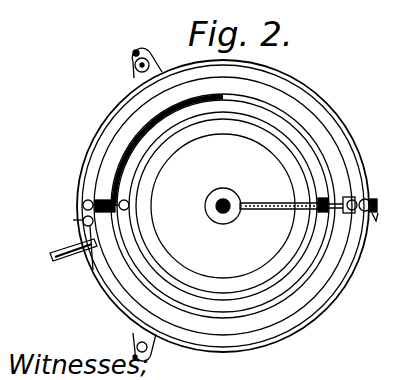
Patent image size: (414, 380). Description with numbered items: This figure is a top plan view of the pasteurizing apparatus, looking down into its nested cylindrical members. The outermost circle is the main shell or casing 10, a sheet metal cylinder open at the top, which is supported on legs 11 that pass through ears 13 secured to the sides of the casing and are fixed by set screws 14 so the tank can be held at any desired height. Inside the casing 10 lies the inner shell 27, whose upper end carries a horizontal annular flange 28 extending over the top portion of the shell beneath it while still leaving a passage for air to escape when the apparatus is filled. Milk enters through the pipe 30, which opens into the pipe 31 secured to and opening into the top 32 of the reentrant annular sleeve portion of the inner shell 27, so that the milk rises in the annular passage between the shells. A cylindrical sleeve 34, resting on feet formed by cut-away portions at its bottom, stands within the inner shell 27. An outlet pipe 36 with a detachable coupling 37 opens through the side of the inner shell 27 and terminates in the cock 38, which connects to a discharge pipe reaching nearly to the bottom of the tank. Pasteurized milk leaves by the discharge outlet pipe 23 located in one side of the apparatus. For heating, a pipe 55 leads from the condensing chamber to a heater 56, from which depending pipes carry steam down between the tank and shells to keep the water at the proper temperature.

The main shell or casing 10 is at (294, 78).
The legs 11 is at (123, 347).
The ears 13 is at (134, 78).
The set screws 14 is at (135, 52).
The discharge outlet pipe 23 is at (67, 243).
The inner shell 27 is at (292, 115).
The horizontal annular flange 28 is at (113, 260).
The pipe 30 is at (211, 214).
The pipe 31 is at (229, 216).
The top of the reentrant annular sleeve portion 32 is at (223, 206).
The cylindrical sleeve 34 is at (302, 152).
The outlet pipes 36 is at (268, 202).
The detachable coupling 37 is at (320, 208).
The cock 38 is at (365, 200).
The pipe 55 is at (90, 187).
The heater 56 is at (87, 195).